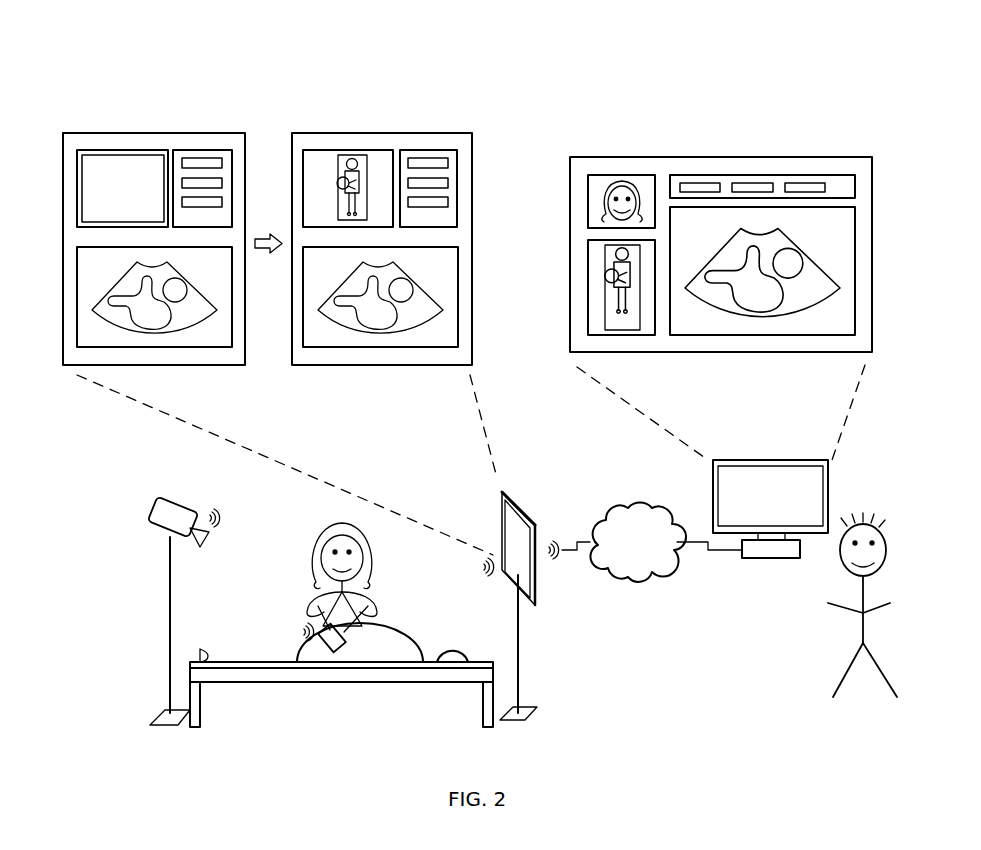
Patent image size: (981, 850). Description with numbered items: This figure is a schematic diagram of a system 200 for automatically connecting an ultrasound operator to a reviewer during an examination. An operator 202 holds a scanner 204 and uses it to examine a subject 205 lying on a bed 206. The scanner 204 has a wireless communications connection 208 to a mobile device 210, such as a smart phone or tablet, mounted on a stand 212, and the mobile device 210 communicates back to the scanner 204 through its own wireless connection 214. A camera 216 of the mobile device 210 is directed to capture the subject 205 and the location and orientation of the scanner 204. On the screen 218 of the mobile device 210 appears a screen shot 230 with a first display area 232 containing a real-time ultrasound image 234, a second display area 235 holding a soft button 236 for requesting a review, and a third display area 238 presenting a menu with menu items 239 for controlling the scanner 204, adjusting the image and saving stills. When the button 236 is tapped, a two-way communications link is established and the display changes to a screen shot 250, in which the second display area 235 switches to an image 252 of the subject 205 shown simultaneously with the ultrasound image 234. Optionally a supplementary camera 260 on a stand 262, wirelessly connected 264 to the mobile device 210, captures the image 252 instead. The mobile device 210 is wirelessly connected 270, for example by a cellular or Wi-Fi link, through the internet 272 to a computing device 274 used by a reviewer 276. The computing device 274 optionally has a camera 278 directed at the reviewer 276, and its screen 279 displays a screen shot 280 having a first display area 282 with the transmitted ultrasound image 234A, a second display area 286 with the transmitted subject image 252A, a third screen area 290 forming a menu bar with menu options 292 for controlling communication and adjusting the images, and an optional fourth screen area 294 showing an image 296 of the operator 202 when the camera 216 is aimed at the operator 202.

The system 200 is at (110, 65).
The operator 202 is at (313, 567).
The scanner 204 is at (335, 648).
The subject 205 is at (408, 640).
The bed 206 is at (427, 682).
The wireless communications connection 208 is at (298, 633).
The mobile device 210 is at (535, 587).
The stand 212 is at (522, 650).
The wireless connection 214 is at (478, 572).
The camera 216 is at (517, 510).
The screen 218 is at (502, 530).
The screen shot 230 is at (153, 133).
The first display area 232 is at (77, 262).
The ultrasound image 234 is at (100, 302).
The image of the ultrasound scan 234A is at (840, 282).
The second display area 235 is at (87, 150).
The soft button 236 is at (122, 153).
The third display area 238 is at (197, 150).
The menu items 239 is at (222, 162).
The screen shot 250 is at (437, 133).
The image of the subject 252 is at (355, 155).
The image of the subject 252A is at (607, 295).
The supplementary camera 260 is at (157, 502).
The stand 262 is at (170, 667).
The wireless connection 264 is at (223, 510).
The wireless connection 270 is at (555, 542).
The internet 272 is at (647, 580).
The computing device 274 is at (752, 560).
The reviewer 276 is at (848, 673).
The camera 278 is at (770, 465).
The screen 279 is at (827, 485).
The screen shot 280 is at (735, 155).
The first display area 282 is at (857, 230).
The second display area 286 is at (588, 255).
The third screen area 290 is at (857, 185).
The menu options 292 is at (808, 182).
The fourth screen area 294 is at (598, 173).
The image of the operator 296 is at (637, 180).